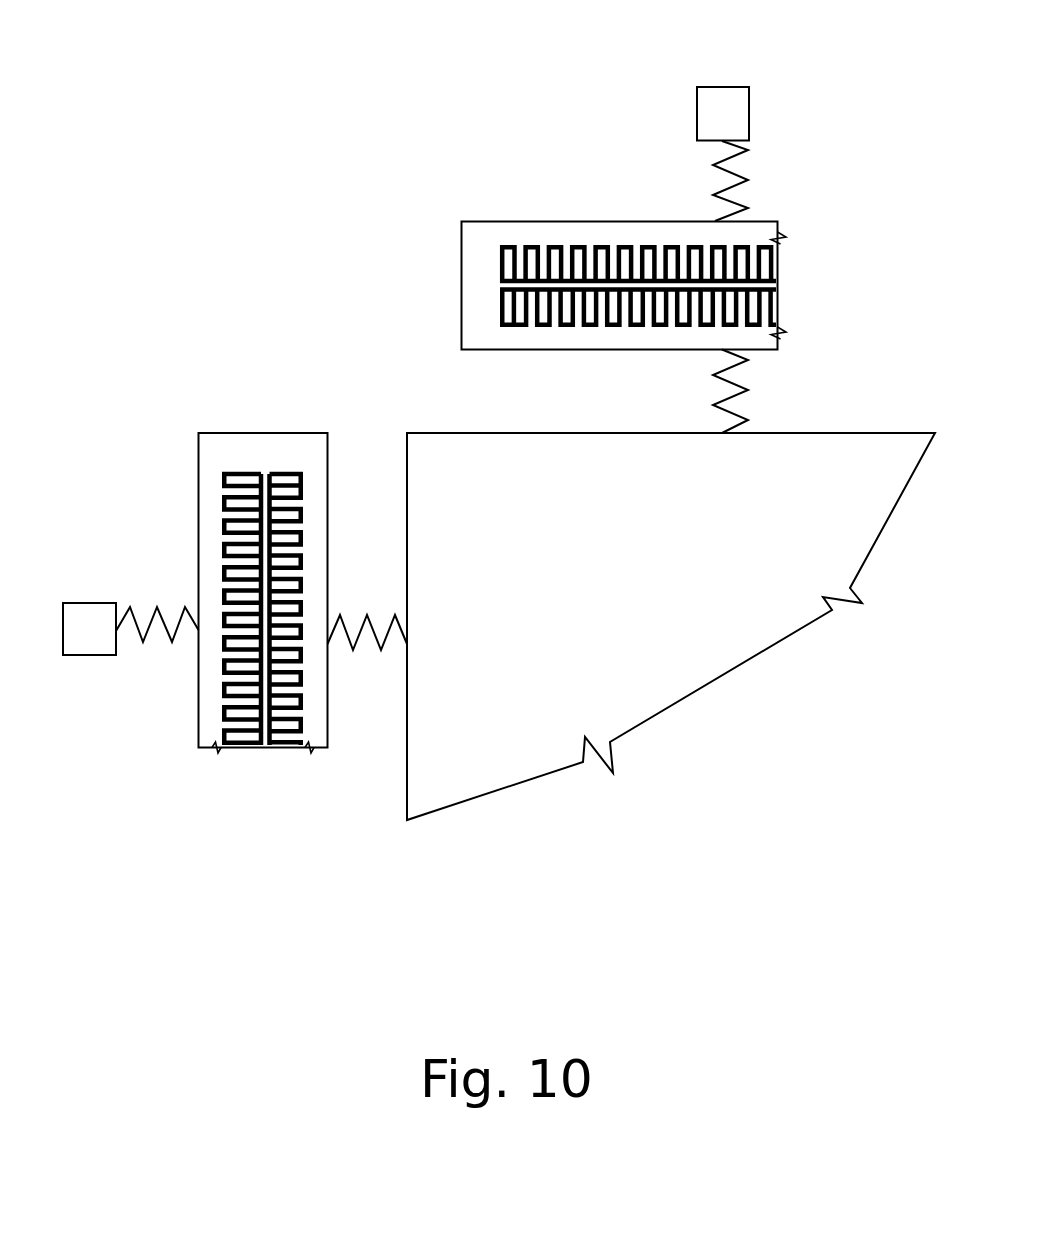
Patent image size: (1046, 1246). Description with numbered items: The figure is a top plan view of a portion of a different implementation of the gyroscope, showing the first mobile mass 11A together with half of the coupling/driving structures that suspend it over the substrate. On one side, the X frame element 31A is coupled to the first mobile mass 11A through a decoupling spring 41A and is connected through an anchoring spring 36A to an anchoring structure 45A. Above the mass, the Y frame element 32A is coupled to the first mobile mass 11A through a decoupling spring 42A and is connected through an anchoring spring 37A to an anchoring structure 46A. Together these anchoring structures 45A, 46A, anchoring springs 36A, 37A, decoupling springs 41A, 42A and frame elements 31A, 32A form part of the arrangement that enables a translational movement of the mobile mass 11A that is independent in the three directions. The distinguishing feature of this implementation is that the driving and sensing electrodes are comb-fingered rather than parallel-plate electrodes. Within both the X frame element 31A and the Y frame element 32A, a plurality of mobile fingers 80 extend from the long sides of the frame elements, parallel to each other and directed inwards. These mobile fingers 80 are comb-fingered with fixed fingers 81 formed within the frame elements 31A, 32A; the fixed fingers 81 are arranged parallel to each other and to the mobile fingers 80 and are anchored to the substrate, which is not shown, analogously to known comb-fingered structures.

The first mobile mass 11A is at (723, 647).
The X frame element 31A is at (226, 433).
The Y frame element 32A is at (470, 228).
The mobile fingers 80 is at (612, 253).
The fixed fingers 81 is at (668, 262).
The anchoring spring 36A is at (143, 637).
The anchoring spring 37A is at (738, 172).
The decoupling spring 41A is at (361, 613).
The decoupling spring 42A is at (752, 392).
The anchoring structure 45A is at (80, 603).
The anchoring structure 46A is at (722, 90).